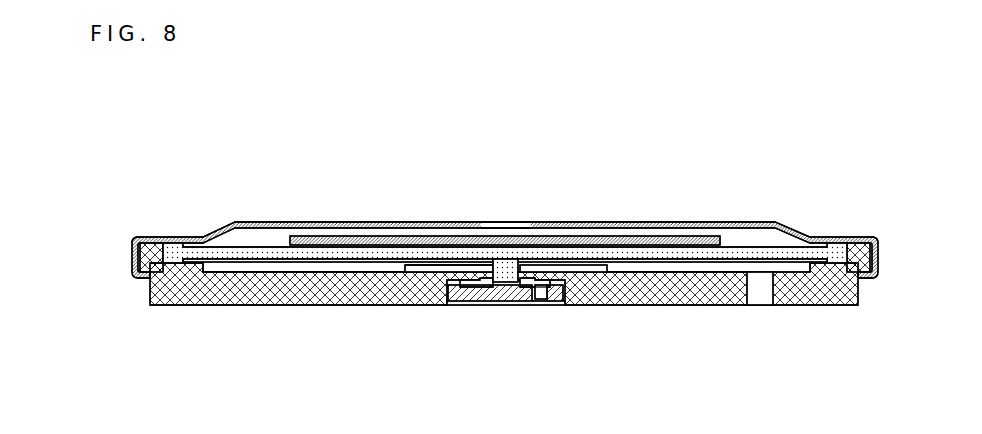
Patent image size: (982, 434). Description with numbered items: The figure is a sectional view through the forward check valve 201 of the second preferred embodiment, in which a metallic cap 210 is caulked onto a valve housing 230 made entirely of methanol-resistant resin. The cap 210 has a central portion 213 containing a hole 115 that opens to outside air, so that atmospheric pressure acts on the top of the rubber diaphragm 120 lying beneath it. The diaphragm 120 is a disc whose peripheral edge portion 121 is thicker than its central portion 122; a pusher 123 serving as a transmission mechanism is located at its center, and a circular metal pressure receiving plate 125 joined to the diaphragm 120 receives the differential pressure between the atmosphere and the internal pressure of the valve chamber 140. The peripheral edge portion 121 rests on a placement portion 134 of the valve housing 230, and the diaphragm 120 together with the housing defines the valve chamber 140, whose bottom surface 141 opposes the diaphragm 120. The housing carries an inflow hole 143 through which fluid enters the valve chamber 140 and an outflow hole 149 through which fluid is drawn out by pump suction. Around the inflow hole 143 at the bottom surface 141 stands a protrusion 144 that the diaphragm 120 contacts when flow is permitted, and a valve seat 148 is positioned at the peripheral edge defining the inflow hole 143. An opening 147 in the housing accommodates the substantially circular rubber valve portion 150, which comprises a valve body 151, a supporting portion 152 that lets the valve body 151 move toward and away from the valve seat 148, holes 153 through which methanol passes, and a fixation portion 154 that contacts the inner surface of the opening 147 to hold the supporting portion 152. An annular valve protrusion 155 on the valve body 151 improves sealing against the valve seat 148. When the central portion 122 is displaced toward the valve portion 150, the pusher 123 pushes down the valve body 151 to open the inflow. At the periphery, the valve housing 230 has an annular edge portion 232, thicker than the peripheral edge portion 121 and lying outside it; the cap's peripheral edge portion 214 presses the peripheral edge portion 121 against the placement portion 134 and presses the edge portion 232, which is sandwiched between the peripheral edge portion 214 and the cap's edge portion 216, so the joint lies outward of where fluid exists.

The forward check valve 201 is at (878, 200).
The cap 210 is at (505, 241).
The central portion of cap 213 is at (302, 222).
The peripheral edge portion of cap 214 is at (157, 238).
The edge portion of cap 216 is at (138, 278).
The peripheral edge portion of diaphragm 121 is at (133, 242).
The hole 115 is at (522, 223).
The diaphragm 120 is at (505, 202).
The central portion of diaphragm 122 is at (582, 252).
The pusher 123 is at (503, 262).
The pressure receiving plate 125 is at (638, 236).
The valve housing 230 is at (845, 307).
The annular edge portion 232 is at (131, 258).
The valve chamber 140 is at (340, 272).
The bottom surface of valve chamber 141 is at (282, 278).
The placement portion 134 is at (182, 280).
The outflow hole 149 is at (762, 285).
The opening 147 is at (432, 272).
The protrusion 144 is at (437, 267).
The valve seat 148 is at (472, 272).
The inflow hole 143 is at (533, 273).
The valve portion 150 is at (504, 342).
The valve body 151 is at (502, 303).
The supporting portion 152 is at (474, 296).
The holes 153 is at (541, 295).
The fixation portion 154 is at (556, 295).
The valve protrusion 155 is at (524, 290).